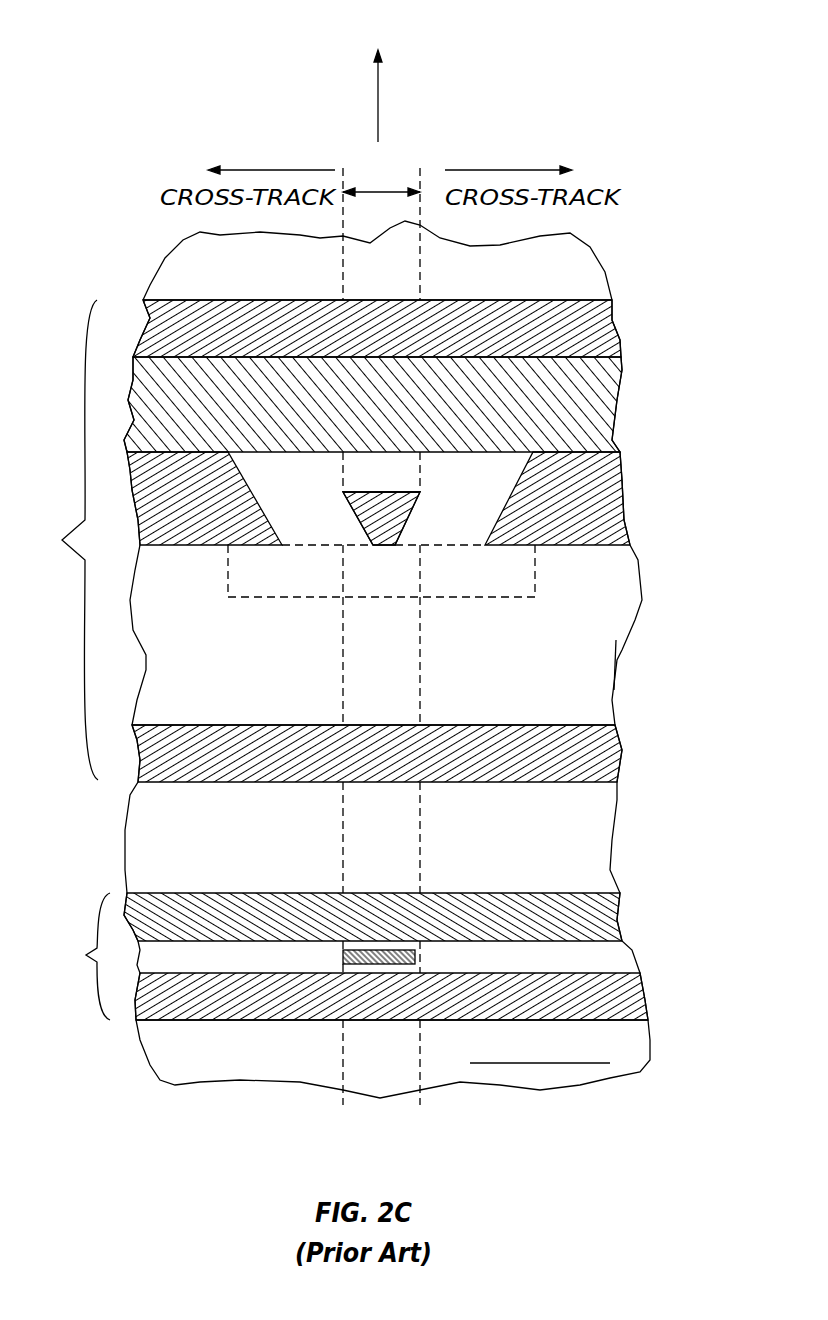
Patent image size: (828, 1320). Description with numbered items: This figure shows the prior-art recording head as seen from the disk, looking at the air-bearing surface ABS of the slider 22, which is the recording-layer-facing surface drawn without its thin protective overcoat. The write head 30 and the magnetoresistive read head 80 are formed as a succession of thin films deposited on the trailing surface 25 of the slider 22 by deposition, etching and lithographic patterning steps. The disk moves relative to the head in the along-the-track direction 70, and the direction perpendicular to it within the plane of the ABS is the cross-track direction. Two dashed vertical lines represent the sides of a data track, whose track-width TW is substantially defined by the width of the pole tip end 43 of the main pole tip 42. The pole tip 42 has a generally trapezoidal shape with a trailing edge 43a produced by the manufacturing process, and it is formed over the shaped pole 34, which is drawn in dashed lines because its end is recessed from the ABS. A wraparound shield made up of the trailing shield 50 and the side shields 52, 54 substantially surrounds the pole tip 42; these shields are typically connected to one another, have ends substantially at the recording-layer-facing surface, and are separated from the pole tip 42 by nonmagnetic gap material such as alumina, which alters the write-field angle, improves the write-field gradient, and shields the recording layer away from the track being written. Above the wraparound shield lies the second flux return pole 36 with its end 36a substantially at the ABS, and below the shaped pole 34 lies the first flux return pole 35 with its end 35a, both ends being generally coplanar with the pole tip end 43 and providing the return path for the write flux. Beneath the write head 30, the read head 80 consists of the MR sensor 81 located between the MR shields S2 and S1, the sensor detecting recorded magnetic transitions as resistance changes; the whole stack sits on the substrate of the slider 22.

The along-the-track direction 70 is at (378, 105).
The track-width TW is at (381, 181).
The second flux return pole 36 is at (620, 350).
The end of second flux return pole 36a is at (592, 318).
The trailing shield 50 is at (592, 410).
The side shield 54 is at (160, 522).
The side shield 52 is at (605, 508).
The pole tip portion 42 is at (352, 522).
The pole tip end 43 is at (392, 528).
The trailing edge 43a is at (405, 492).
The shaped pole 34 is at (492, 598).
The air-bearing surface ABS is at (605, 668).
The first flux return pole 35 is at (618, 768).
The end of first flux return pole 35a is at (600, 735).
The MR shield S2 is at (595, 918).
The MR sensor 81 is at (416, 957).
The MR shield S1 is at (608, 992).
The trailing surface 25 is at (495, 1020).
The slider 22 is at (182, 1085).
The write head 30 is at (63, 540).
The magnetoresistive read head 80 is at (74, 956).